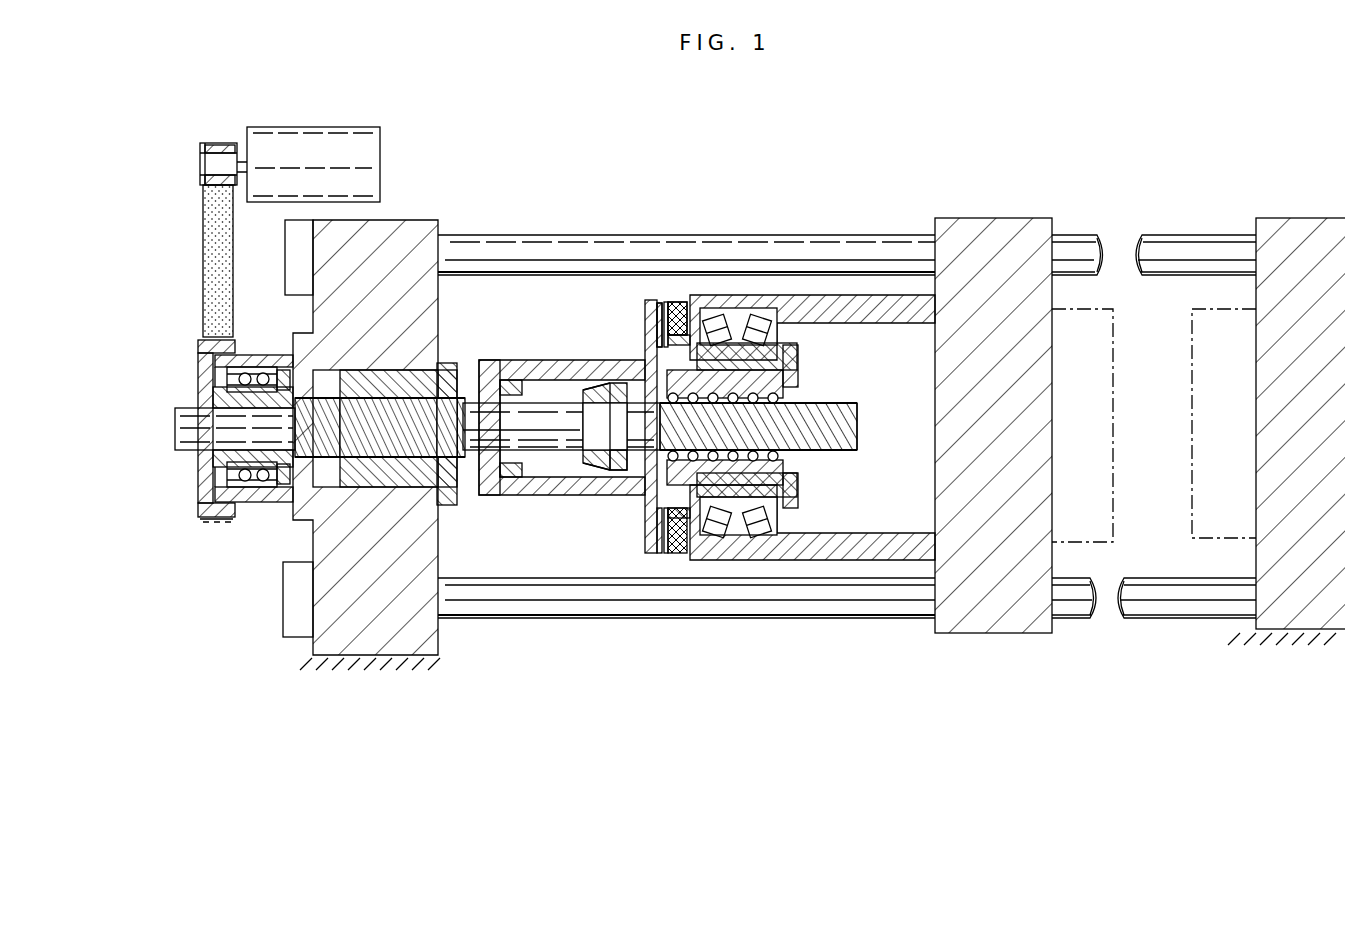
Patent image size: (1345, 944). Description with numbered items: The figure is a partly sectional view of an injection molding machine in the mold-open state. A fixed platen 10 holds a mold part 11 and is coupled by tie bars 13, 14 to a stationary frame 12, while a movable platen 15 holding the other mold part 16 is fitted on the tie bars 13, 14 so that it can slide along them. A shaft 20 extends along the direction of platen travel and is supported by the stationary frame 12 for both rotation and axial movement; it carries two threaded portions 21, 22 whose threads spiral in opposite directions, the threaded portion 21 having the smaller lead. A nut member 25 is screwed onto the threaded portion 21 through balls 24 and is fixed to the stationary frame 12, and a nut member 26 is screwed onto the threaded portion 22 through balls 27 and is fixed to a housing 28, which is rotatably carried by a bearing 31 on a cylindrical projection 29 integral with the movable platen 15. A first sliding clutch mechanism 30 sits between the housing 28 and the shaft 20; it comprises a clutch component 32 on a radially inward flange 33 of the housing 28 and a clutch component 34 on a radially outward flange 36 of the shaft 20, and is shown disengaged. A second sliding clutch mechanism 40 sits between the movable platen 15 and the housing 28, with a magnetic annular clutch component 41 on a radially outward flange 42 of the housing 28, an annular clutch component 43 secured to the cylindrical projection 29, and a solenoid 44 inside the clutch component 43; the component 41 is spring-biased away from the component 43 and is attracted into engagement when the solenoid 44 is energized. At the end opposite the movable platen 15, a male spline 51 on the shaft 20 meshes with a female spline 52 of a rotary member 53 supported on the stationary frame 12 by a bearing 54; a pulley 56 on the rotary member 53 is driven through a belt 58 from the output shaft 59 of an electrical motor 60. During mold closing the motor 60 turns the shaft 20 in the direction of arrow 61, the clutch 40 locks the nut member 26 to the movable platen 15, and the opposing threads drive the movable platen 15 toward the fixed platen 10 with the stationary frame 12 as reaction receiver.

The fixed platen 10 is at (1300, 228).
The mold part 11 is at (1188, 407).
The stationary frame 12 is at (412, 230).
The tie bar 13 is at (786, 245).
The tie bar 14 is at (750, 605).
The movable platen 15 is at (992, 228).
The mold part 16 is at (1115, 380).
The shaft 20 is at (575, 450).
The threaded portion 21 is at (462, 400).
The threaded portion 22 is at (850, 402).
The balls 24 is at (450, 495).
The nut member 25 is at (448, 372).
The nut member 26 is at (785, 385).
The balls 27 is at (785, 462).
The housing 28 is at (562, 362).
The cylindrical projection 29 is at (870, 298).
The first sliding clutch mechanism 30 is at (548, 460).
The bearing 31 is at (775, 330).
The clutch component 32 is at (515, 380).
The radially inward flange 33 is at (486, 478).
The clutch component 34 is at (597, 385).
The radially outward flange 36 is at (618, 472).
The second sliding clutch mechanism 40 is at (652, 300).
The annular clutch component 41 is at (657, 320).
The radially outward flange 42 is at (650, 530).
The annular clutch component 43 is at (676, 302).
The solenoid 44 is at (690, 335).
The male spline 51 is at (185, 452).
The female spline 52 is at (220, 405).
The rotary member 53 is at (205, 390).
The bearing 54 is at (258, 366).
The pulley 56 is at (210, 357).
The belt 58 is at (212, 250).
The output shaft 59 is at (242, 160).
The electrical motor 60 is at (345, 140).
The arrow 61 is at (545, 400).